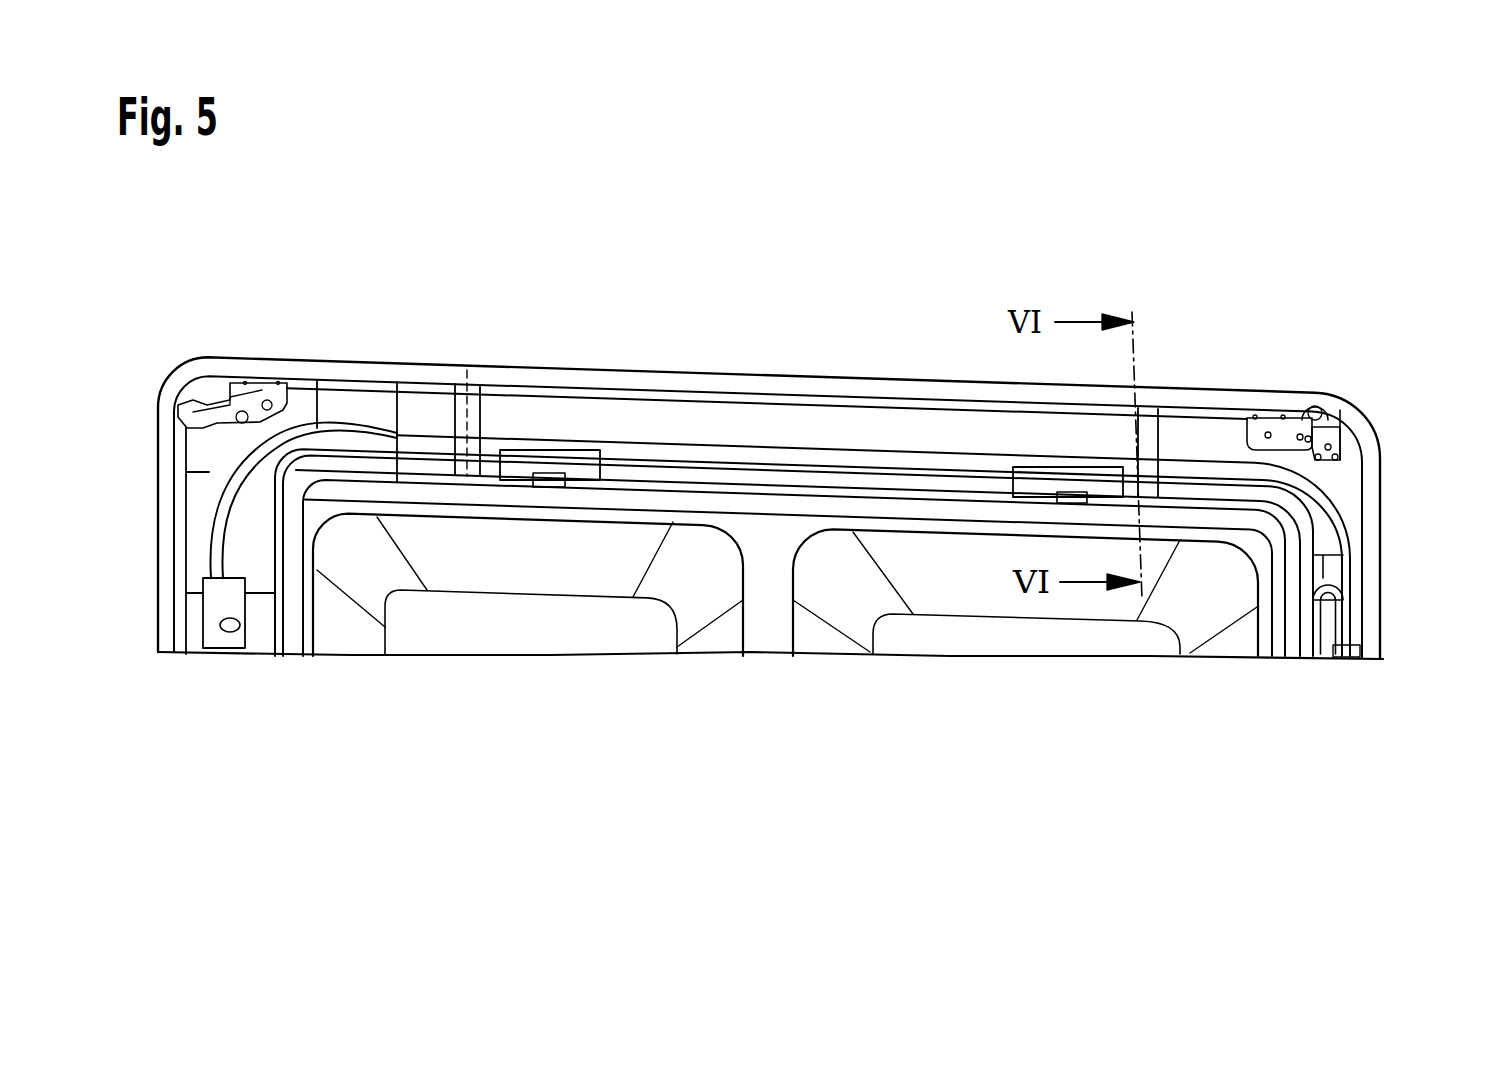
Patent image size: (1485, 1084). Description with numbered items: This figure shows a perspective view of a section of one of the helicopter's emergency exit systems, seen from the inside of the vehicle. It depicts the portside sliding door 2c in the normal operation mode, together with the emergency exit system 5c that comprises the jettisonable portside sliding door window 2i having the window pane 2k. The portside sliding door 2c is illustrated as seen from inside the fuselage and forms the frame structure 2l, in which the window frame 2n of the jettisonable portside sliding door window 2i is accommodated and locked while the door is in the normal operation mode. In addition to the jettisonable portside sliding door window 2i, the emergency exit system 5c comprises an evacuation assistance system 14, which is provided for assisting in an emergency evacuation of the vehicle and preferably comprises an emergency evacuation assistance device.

The portside sliding door 2c is at (516, 336).
The evacuation assistance system 14 is at (1172, 445).
The window frame 2n is at (1308, 529).
The emergency exit system 5c is at (349, 664).
The frame structure 2l is at (421, 490).
The jettisonable portside sliding door window 2i is at (990, 634).
The window pane 2k is at (1097, 645).